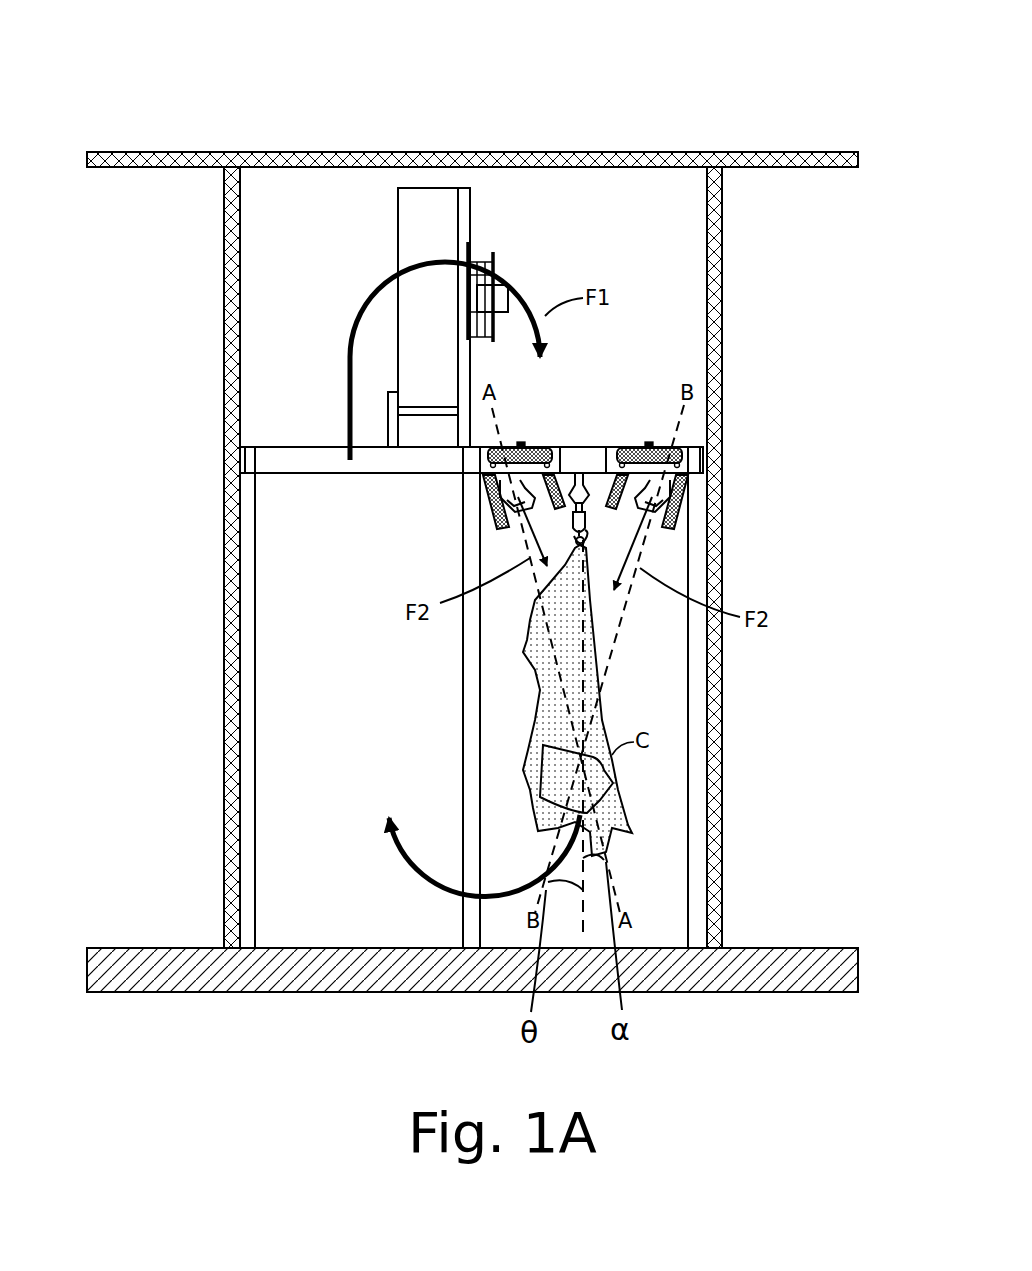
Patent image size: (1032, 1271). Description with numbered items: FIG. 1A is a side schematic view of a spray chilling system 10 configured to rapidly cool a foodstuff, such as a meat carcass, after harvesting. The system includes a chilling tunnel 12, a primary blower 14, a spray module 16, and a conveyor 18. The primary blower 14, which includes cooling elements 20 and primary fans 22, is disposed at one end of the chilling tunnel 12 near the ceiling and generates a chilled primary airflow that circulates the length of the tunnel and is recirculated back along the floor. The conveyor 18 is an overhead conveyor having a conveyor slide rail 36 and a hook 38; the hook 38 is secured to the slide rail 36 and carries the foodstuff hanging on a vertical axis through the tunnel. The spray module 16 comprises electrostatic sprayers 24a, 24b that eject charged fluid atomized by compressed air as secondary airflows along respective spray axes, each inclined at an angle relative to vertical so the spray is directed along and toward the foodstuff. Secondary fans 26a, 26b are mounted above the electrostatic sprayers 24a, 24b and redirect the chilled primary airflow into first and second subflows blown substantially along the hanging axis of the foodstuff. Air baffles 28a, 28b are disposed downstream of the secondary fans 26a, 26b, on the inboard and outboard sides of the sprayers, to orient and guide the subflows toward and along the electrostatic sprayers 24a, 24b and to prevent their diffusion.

The spray chilling system 10 is at (772, 122).
The chilling tunnel 12 is at (678, 580).
The primary blower 14 is at (393, 218).
The spray module 16 is at (636, 424).
The conveyor 18 is at (584, 460).
The cooling elements 20 is at (466, 218).
The primary fans 22 is at (508, 262).
The electrostatic sprayer 24a is at (500, 505).
The electrostatic sprayer 24b is at (655, 497).
The secondary fan 26a is at (522, 447).
The secondary fan 26b is at (680, 448).
The air baffle 28a is at (476, 488).
The air baffle 28b is at (692, 522).
The conveyor slide rail 36 is at (567, 473).
The hook 38 is at (592, 535).